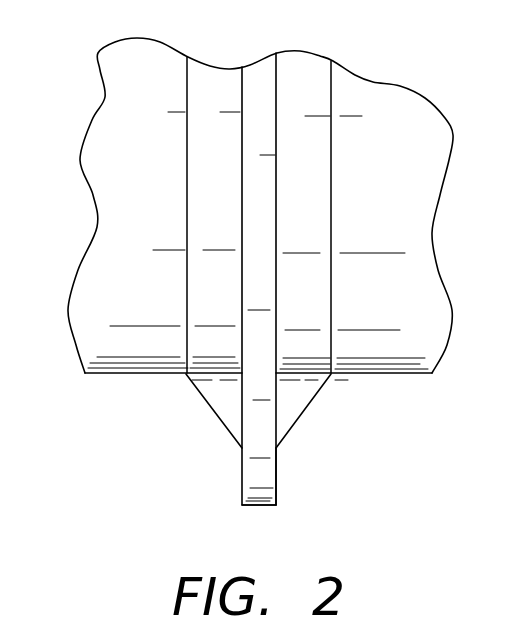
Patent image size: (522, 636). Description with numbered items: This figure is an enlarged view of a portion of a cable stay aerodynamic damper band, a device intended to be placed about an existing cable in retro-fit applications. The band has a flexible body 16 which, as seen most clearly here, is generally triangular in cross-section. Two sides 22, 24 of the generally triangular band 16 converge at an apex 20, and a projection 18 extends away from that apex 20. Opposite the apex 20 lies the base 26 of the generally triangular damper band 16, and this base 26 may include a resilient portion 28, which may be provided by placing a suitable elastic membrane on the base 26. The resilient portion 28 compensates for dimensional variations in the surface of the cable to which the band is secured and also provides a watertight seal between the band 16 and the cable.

The flexible body 16 is at (203, 468).
The projection 18 is at (262, 493).
The apex 20 is at (276, 445).
The side 22 is at (285, 418).
The side 24 is at (213, 413).
The base 26 is at (307, 374).
The resilient portion 28 is at (288, 382).